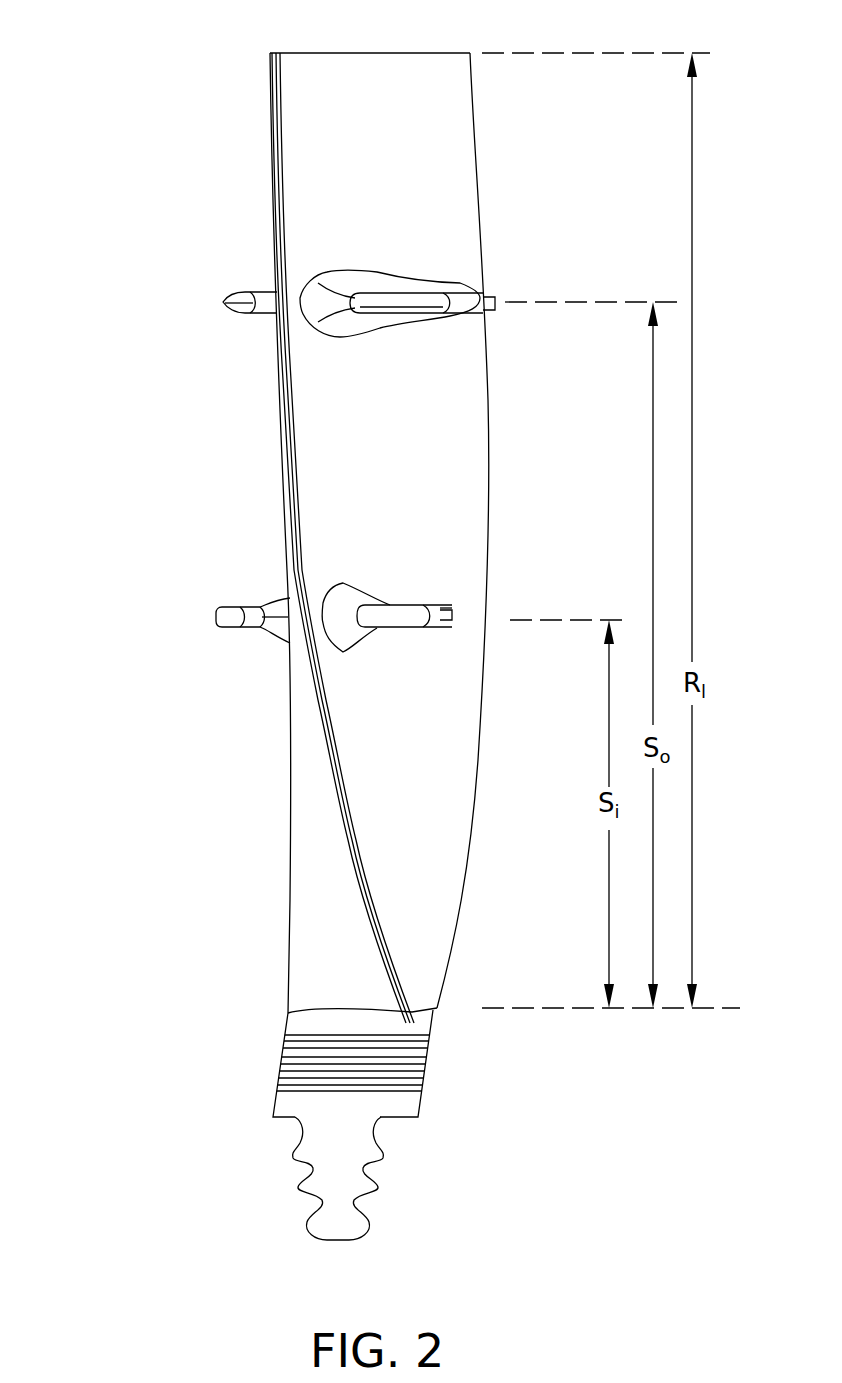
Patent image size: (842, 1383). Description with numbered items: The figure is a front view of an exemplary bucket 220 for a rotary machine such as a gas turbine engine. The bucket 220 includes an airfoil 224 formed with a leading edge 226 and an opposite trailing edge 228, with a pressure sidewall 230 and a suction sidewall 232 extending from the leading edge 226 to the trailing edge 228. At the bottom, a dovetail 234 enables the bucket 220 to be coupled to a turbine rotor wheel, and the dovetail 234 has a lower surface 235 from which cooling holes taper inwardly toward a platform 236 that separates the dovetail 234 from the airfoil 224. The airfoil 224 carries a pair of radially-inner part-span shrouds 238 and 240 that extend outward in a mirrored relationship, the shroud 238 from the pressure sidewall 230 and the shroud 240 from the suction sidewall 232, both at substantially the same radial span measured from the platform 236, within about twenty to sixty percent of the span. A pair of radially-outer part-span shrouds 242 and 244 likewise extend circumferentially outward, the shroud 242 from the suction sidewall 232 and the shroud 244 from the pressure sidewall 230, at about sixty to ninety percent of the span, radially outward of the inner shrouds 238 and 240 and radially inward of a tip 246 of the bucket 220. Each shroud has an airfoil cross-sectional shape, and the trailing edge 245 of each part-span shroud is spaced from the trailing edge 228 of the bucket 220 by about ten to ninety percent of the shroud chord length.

The bucket 220 is at (142, 194).
The airfoil 224 is at (408, 448).
The leading edge 226 is at (333, 773).
The trailing edge 228 is at (488, 381).
The pressure sidewall 230 is at (395, 525).
The suction sidewall 232 is at (312, 797).
The dovetail 234 is at (445, 1082).
The lower surface 235 is at (342, 1242).
The platform 236 is at (345, 1025).
The radially-inner part-span shroud 238 is at (395, 613).
The radially-inner part-span shroud 240 is at (283, 604).
The radially-outer part-span shroud 242 is at (418, 298).
The radially-outer part-span shroud 244 is at (236, 293).
The trailing edge of part-span shroud 245 is at (490, 295).
The tip 246 is at (403, 53).